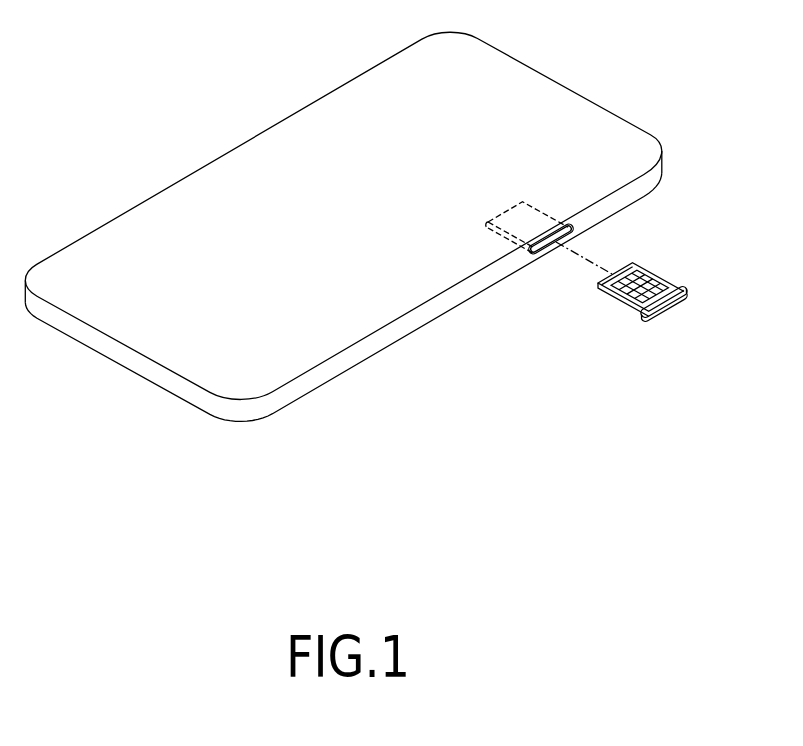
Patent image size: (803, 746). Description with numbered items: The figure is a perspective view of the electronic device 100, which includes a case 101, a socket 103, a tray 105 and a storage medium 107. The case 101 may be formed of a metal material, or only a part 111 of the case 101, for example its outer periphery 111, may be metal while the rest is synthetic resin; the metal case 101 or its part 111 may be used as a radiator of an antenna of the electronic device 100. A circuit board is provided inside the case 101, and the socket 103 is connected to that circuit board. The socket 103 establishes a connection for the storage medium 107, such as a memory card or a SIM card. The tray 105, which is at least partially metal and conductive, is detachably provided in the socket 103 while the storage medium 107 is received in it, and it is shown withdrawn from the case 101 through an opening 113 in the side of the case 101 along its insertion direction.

The electronic device 100 is at (125, 78).
The case 101 is at (557, 83).
The socket 103 is at (490, 229).
The tray 105 is at (665, 306).
The storage medium 107 is at (643, 271).
The part of the case 111 is at (362, 348).
The tray insertion opening 113 is at (545, 253).